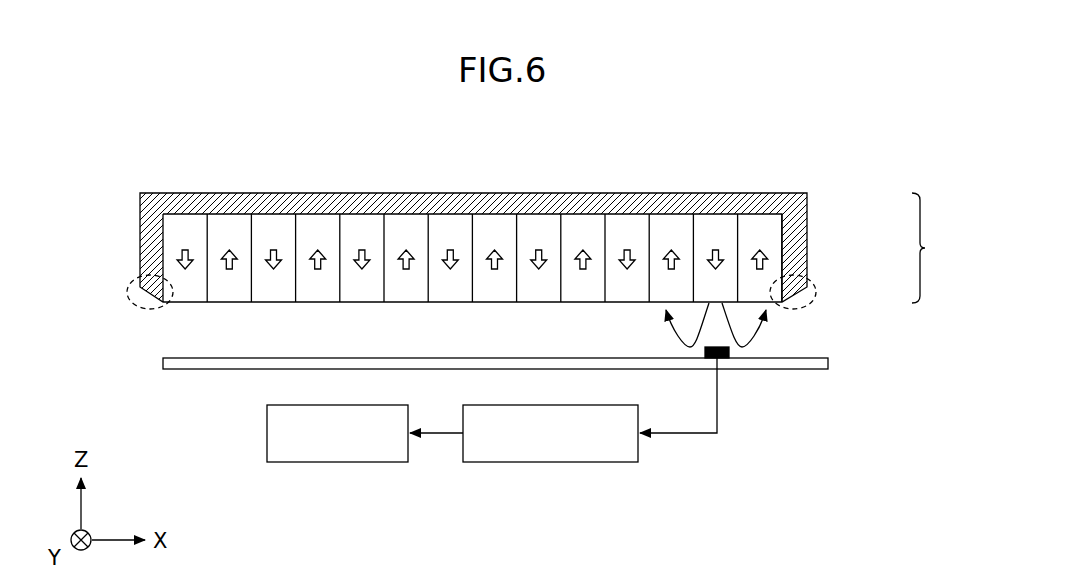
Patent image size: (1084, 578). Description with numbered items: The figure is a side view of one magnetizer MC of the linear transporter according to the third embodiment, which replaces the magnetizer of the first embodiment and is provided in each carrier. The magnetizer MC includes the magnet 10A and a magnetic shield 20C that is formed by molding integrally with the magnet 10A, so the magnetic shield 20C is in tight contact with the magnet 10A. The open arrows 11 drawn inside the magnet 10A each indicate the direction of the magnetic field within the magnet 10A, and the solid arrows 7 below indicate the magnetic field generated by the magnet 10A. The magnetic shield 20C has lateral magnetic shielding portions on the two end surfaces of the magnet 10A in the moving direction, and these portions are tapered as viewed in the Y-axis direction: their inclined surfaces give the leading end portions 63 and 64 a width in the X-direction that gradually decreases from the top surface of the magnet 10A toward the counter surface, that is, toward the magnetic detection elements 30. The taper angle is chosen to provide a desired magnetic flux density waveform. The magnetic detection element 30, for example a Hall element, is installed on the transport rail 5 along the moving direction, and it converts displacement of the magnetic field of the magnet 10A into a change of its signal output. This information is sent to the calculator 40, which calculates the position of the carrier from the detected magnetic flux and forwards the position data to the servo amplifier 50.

The magnet 10A is at (318, 222).
The magnetic shield 20C is at (588, 193).
The open arrows 11 is at (716, 249).
The leading end portion 63 is at (130, 284).
The leading end portion 64 is at (818, 290).
The solid arrows 7 is at (763, 327).
The transport rail 5 is at (838, 349).
The magnetic detection element 30 is at (729, 352).
The calculator 40 is at (609, 388).
The servo amplifier 50 is at (348, 405).
The magnetizer MC is at (494, 216).